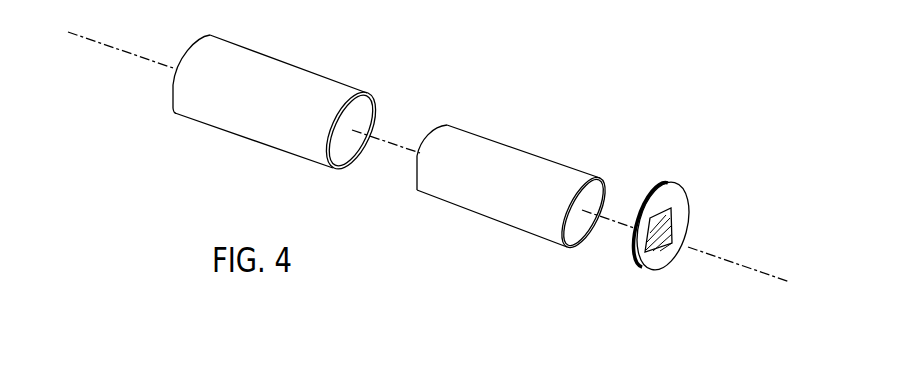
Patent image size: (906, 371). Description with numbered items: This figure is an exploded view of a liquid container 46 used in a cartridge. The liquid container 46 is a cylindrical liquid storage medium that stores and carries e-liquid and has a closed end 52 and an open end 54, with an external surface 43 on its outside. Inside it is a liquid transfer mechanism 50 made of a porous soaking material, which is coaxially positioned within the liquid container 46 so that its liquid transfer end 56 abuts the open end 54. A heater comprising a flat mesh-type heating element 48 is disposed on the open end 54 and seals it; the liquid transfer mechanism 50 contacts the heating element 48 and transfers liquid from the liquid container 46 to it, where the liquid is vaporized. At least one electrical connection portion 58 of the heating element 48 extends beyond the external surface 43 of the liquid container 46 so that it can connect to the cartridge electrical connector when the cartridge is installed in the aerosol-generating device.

The external surface 43 is at (280, 121).
The liquid container 46 is at (264, 124).
The heating element 48 is at (655, 232).
The liquid transfer mechanism 50 is at (515, 203).
The closed end 52 is at (172, 88).
The open end 54 is at (350, 168).
The liquid transfer end 56 is at (597, 235).
The electrical connection portion 58 is at (679, 214).